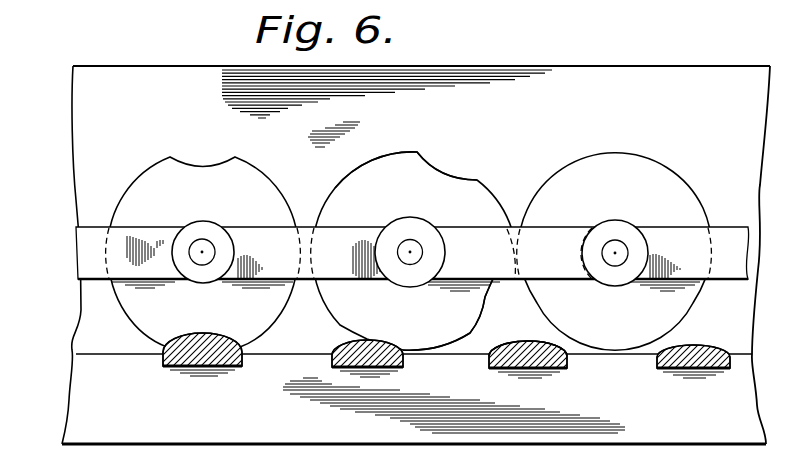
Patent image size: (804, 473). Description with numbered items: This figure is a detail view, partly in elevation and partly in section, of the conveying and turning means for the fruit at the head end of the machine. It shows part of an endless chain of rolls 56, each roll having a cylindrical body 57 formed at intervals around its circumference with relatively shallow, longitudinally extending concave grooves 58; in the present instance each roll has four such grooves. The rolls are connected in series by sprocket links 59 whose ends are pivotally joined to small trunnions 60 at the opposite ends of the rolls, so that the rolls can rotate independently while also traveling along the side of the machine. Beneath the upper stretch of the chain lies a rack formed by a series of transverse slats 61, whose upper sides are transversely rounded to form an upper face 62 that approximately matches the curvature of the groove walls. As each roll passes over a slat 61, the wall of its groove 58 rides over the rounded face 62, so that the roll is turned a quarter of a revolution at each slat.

The endless chain of rolls 56 is at (433, 190).
The roll body 57 is at (408, 163).
The concave grooves 58 is at (483, 303).
The sprocket links 59 is at (557, 238).
The trunnions 60 is at (418, 248).
The transverse slats 61 is at (535, 364).
The rounded upper face of slat 62 is at (520, 339).